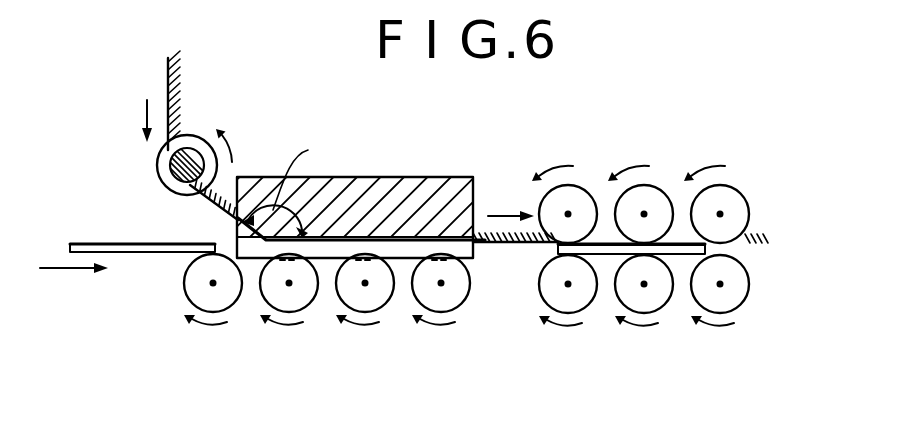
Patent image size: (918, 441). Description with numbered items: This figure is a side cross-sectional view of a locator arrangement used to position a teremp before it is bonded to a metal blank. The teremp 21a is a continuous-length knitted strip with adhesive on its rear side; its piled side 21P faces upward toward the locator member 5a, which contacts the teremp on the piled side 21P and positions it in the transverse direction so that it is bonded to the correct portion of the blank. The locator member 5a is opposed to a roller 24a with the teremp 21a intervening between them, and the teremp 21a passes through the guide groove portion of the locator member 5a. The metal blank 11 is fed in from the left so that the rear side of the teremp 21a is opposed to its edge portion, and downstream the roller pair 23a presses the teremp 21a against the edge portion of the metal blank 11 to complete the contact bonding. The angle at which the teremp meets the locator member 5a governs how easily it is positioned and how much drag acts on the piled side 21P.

The teremp 21a is at (168, 80).
The metal blank 11 is at (141, 243).
The locator member 5a is at (393, 177).
The piled side 21P is at (500, 235).
The roller 24a is at (468, 335).
The roller pair 23a is at (788, 188).